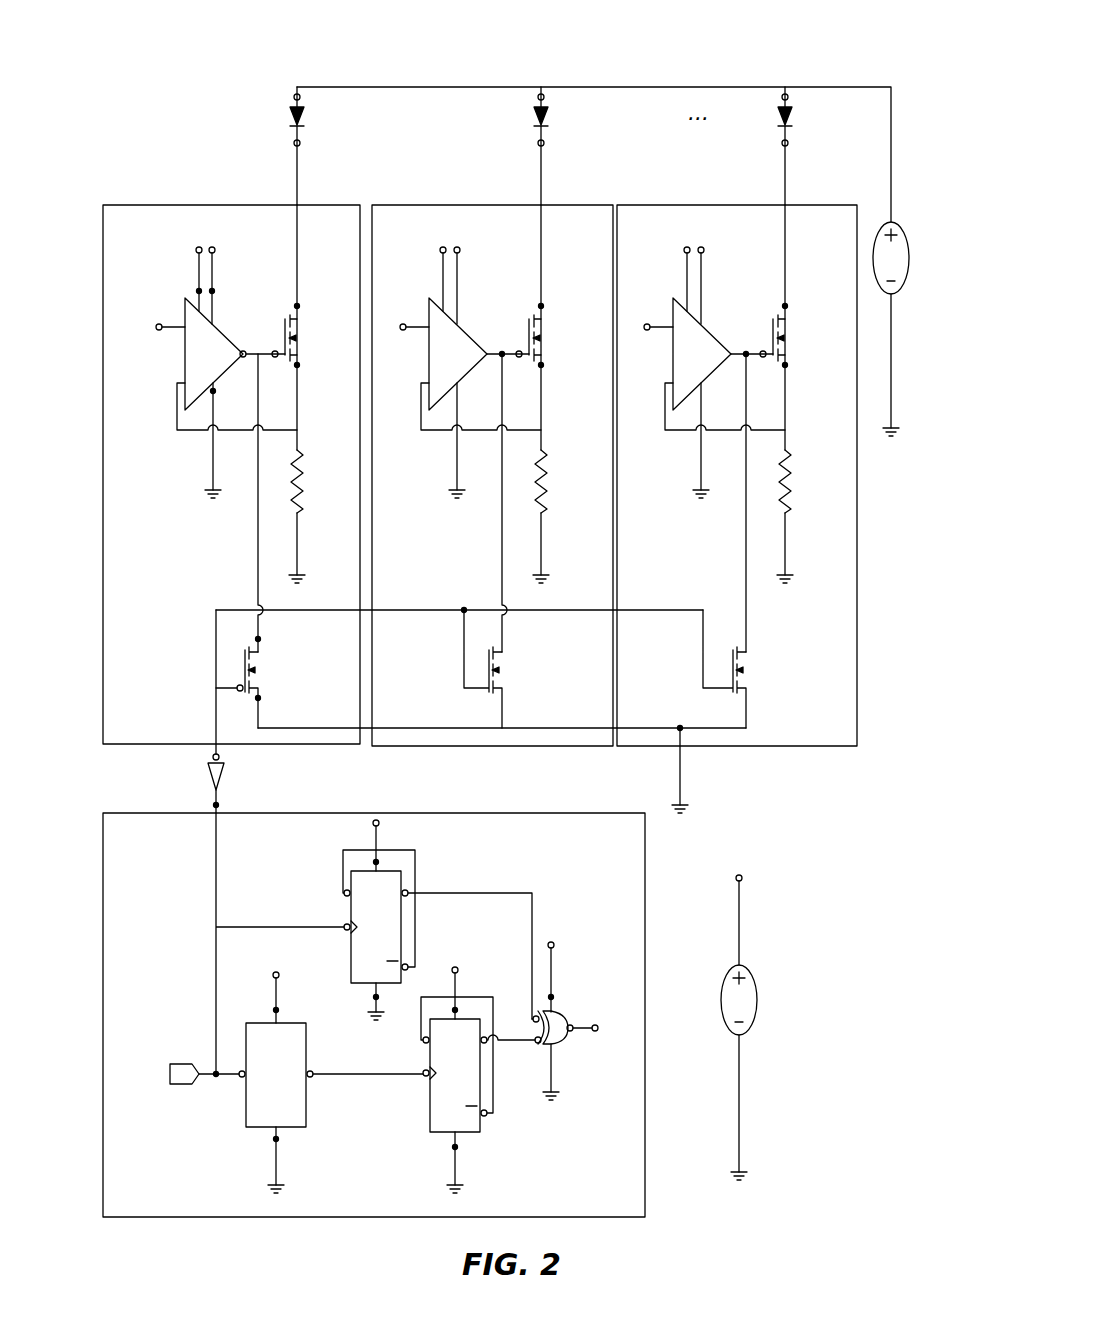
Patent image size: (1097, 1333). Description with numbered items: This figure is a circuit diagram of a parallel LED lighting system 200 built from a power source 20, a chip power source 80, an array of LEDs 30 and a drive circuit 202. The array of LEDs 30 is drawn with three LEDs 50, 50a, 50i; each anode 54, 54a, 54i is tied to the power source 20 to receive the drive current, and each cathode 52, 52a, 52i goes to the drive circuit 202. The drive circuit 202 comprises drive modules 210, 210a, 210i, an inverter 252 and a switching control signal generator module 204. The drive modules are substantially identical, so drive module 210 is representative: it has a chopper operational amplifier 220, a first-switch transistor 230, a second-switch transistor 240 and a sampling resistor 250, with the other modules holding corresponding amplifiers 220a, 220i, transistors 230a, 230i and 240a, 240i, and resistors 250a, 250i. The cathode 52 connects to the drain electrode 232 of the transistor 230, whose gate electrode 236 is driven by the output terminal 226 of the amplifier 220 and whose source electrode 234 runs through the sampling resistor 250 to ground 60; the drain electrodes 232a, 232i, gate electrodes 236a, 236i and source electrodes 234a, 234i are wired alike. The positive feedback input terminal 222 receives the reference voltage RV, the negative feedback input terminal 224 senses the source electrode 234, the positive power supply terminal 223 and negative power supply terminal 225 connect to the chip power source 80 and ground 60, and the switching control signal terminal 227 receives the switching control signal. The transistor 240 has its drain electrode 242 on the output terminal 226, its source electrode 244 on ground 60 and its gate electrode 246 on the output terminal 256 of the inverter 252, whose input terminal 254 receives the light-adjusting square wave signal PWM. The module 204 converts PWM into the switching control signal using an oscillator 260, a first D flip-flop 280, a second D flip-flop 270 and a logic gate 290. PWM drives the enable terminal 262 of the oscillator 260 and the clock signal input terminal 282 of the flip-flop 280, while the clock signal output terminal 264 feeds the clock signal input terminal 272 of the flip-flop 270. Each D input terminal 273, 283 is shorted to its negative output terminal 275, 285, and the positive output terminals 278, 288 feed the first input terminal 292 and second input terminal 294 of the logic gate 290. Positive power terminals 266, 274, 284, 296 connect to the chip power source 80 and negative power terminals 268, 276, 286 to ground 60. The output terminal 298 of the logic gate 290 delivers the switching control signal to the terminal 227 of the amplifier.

The power source 20 is at (912, 248).
The array of LEDs 30 is at (293, 132).
The LED 50 is at (306, 117).
The LED 50a is at (550, 117).
The LED 50i is at (794, 117).
The cathode 52 is at (297, 143).
The cathode 52a is at (541, 143).
The cathode 52i is at (785, 143).
The anode 54 is at (297, 97).
The anode 54a is at (541, 97).
The anode 54i is at (785, 97).
The ground 60 is at (891, 383).
The chip power source 80 is at (768, 1002).
The LED lighting system 200 is at (538, 36).
The drive circuit 202 is at (176, 116).
The switching control signal generator module 204 is at (318, 813).
The drive module 210 is at (185, 205).
The drive module 210a is at (462, 205).
The drive module 210i is at (705, 205).
The chopper operational amplifier 220 is at (172, 388).
The chopper operational amplifier 220a is at (420, 386).
The chopper operational amplifier 220i is at (664, 386).
The positive feedback input terminal 222 is at (183, 322).
The positive power supply terminal 223 is at (212, 291).
The negative feedback input terminal 224 is at (183, 380).
The negative power supply terminal 225 is at (213, 391).
The output terminal 226 is at (243, 351).
The switching control signal terminal 227 is at (199, 291).
The transistor 230 is at (302, 328).
The transistor 230a is at (546, 328).
The transistor 230i is at (790, 328).
The drain electrode 232 is at (297, 306).
The drain electrode 232a is at (541, 306).
The drain electrode 232i is at (785, 306).
The source electrode 234 is at (297, 365).
The source electrode 234a is at (541, 365).
The source electrode 234i is at (785, 365).
The gate electrode 236 is at (275, 357).
The gate electrode 236a is at (516, 352).
The gate electrode 236i is at (760, 352).
The transistor 240 is at (264, 668).
The transistor 240a is at (508, 668).
The transistor 240i is at (752, 668).
The drain electrode 242 is at (258, 639).
The source electrode 244 is at (258, 698).
The gate electrode 246 is at (239, 684).
The sampling resistor 250 is at (304, 474).
The sampling resistor 250a is at (548, 474).
The sampling resistor 250i is at (792, 474).
The inverter 252 is at (203, 802).
The input terminal 254 is at (216, 805).
The output terminal 256 is at (213, 757).
The oscillator 260 is at (243, 1127).
The enable terminal 262 is at (240, 1070).
The clock signal output terminal 264 is at (311, 1070).
The positive power terminal 266 is at (276, 1010).
The negative power terminal 268 is at (276, 1139).
The second D flip-flop 270 is at (427, 1134).
The clock signal input terminal 272 is at (424, 1077).
The D input terminal 273 is at (424, 1043).
The positive power terminal 274 is at (455, 1010).
The negative output terminal 275 is at (487, 1115).
The negative power terminal 276 is at (455, 1147).
The positive output terminal 278 is at (486, 1036).
The first D flip-flop 280 is at (342, 868).
The clock signal input terminal 282 is at (345, 931).
The D input terminal 283 is at (345, 896).
The positive power terminal 284 is at (378, 861).
The negative output terminal 285 is at (407, 964).
The negative power terminal 286 is at (376, 997).
The positive output terminal 288 is at (407, 892).
The logic gate 290 is at (562, 1050).
The first input terminal 292 is at (537, 1044).
The second input terminal 294 is at (538, 1016).
The positive power terminal 296 is at (553, 997).
The output terminal 298 is at (569, 1032).